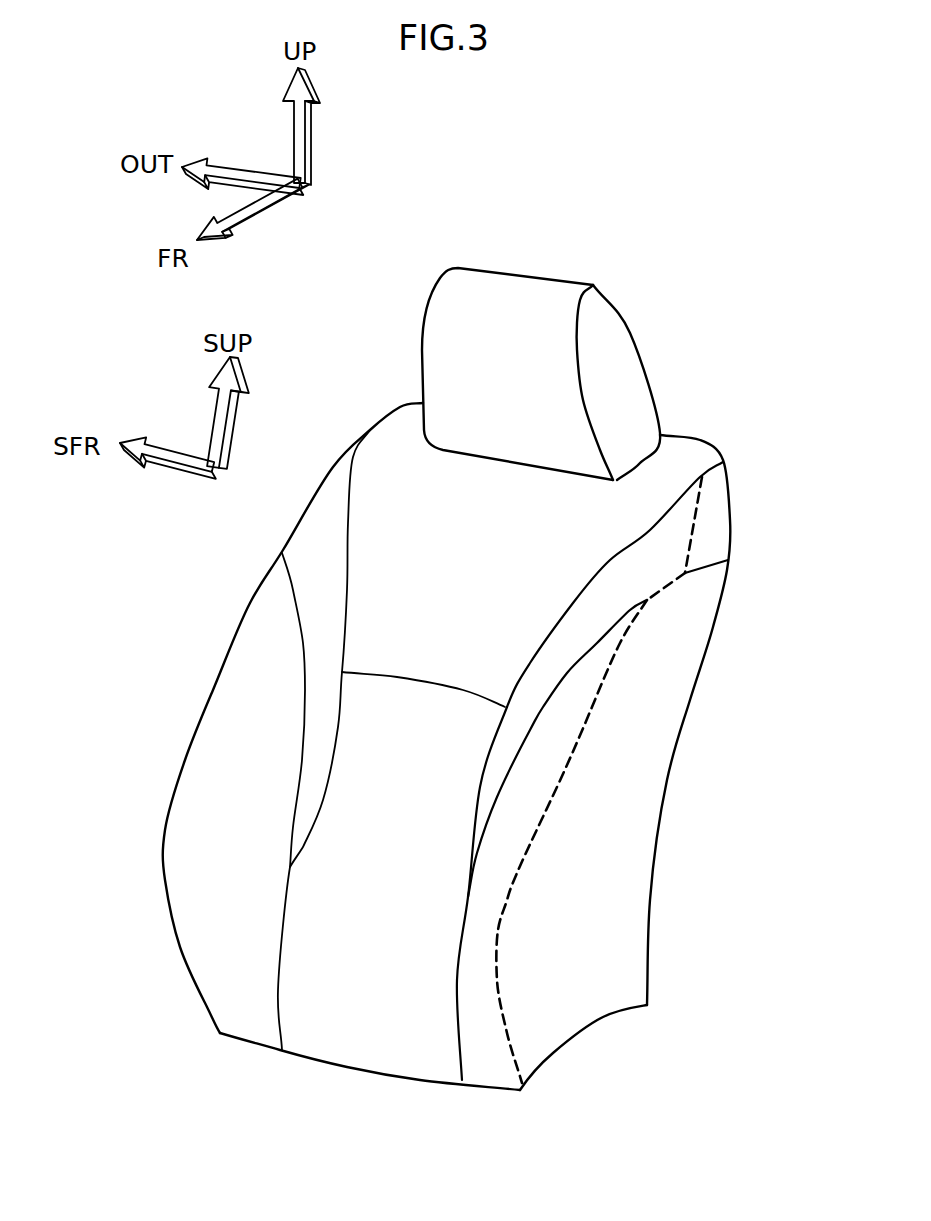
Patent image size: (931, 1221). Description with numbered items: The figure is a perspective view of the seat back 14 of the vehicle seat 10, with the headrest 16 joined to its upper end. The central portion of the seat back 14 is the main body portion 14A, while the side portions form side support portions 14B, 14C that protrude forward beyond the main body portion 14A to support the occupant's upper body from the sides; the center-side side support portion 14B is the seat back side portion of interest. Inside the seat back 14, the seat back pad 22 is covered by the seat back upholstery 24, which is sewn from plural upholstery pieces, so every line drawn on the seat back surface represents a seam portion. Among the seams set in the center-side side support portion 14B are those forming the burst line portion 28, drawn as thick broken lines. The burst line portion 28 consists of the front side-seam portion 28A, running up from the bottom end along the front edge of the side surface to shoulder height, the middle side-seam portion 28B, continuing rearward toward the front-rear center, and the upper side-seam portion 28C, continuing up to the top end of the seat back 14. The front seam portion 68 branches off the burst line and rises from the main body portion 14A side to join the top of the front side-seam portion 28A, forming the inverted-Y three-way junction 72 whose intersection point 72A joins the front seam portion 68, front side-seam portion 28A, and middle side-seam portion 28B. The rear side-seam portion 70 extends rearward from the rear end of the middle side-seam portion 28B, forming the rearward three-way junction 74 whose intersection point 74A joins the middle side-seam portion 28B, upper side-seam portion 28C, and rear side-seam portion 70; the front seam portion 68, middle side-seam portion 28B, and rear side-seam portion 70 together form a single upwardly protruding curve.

The vehicle seat 10 is at (687, 191).
The seat back 14 is at (237, 609).
The main body portion 14A is at (348, 1038).
The center-side side support portion 14B is at (483, 1068).
The side support portion 14C is at (230, 1020).
The headrest 16 is at (633, 330).
The seat back pad 22 is at (632, 845).
The seat back upholstery 24 is at (638, 780).
The burst line portion 28 is at (543, 798).
The front side-seam portion 28A is at (523, 857).
The middle side-seam portion 28B is at (660, 588).
The upper side-seam portion 28C is at (702, 503).
The front seam portion 68 is at (567, 677).
The rear side-seam portion 70 is at (727, 560).
The three-way junction 72 is at (613, 589).
The intersection point 72A is at (648, 603).
The rearward three-way junction 74 is at (723, 548).
The intersection point 74A is at (685, 573).